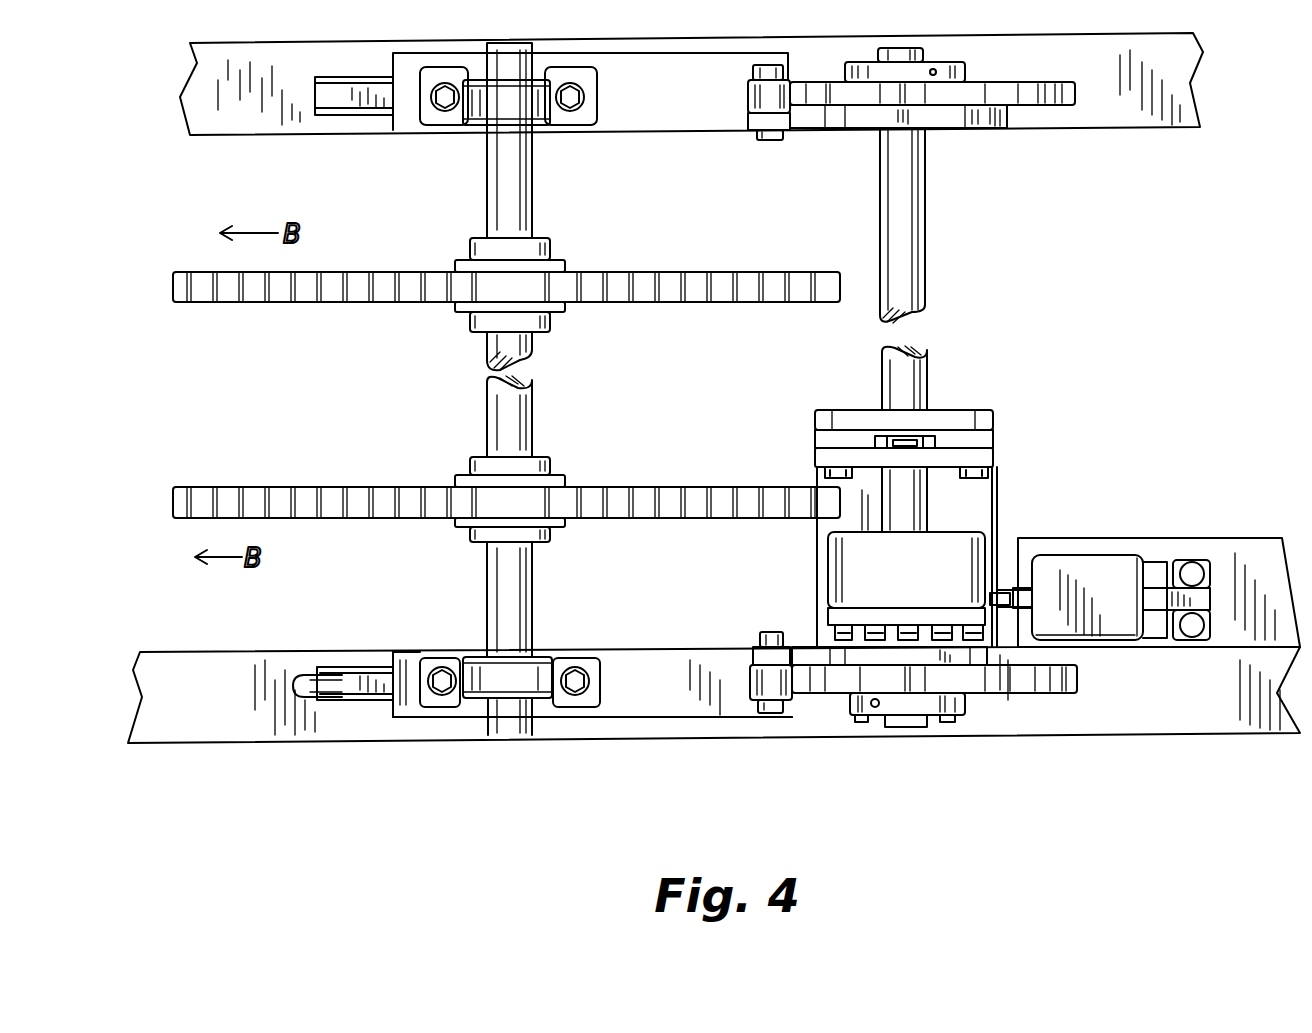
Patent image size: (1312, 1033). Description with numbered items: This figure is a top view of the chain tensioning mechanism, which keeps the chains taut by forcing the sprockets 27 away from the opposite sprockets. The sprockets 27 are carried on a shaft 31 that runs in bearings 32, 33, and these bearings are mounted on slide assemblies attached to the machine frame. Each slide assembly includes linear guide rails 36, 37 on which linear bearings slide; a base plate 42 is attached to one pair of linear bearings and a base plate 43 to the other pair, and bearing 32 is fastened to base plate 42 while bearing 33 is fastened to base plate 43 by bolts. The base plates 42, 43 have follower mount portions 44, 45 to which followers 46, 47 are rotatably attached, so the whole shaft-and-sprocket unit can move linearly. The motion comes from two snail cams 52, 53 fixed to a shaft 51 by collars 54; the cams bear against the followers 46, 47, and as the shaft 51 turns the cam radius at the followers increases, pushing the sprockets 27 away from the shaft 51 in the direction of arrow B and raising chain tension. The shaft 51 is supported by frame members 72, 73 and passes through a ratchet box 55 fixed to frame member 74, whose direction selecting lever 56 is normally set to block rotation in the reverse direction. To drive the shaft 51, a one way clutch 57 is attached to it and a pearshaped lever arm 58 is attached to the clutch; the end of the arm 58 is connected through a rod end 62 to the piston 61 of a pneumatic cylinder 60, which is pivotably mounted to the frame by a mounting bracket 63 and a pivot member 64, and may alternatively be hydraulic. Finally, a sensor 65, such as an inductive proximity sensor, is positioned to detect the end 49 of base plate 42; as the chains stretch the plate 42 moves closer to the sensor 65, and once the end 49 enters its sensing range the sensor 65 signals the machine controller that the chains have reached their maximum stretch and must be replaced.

The sprockets 27 is at (356, 272).
The shaft 31 is at (535, 218).
The bearing 32 is at (470, 657).
The bearing 33 is at (537, 120).
The linear guide rail 36 is at (315, 667).
The linear guide rail 37 is at (313, 86).
The base plate 42 is at (642, 693).
The base plate 43 is at (670, 97).
The follower mount portion 44 is at (760, 640).
The follower mount portion 45 is at (783, 66).
The follower 46 is at (750, 686).
The follower 47 is at (748, 95).
The end of plate 49 is at (393, 718).
The shaft 51 is at (912, 238).
The snail cam 52 is at (1048, 694).
The snail cam 53 is at (1057, 82).
The collars 54 is at (965, 75).
The ratchet box 55 is at (977, 462).
The direction selecting lever 56 is at (908, 437).
The one way clutch 57 is at (828, 575).
The pearshaped lever arm 58 is at (828, 617).
The pneumatic cylinder 60 is at (1090, 568).
The piston 61 is at (1020, 588).
The rod end 62 is at (1005, 606).
The mounting bracket 63 is at (1213, 622).
The pivot member 64 is at (1157, 570).
The sensor 65 is at (310, 700).
The frame member 72 is at (840, 666).
The frame member 73 is at (1008, 128).
The frame member 74 is at (870, 410).